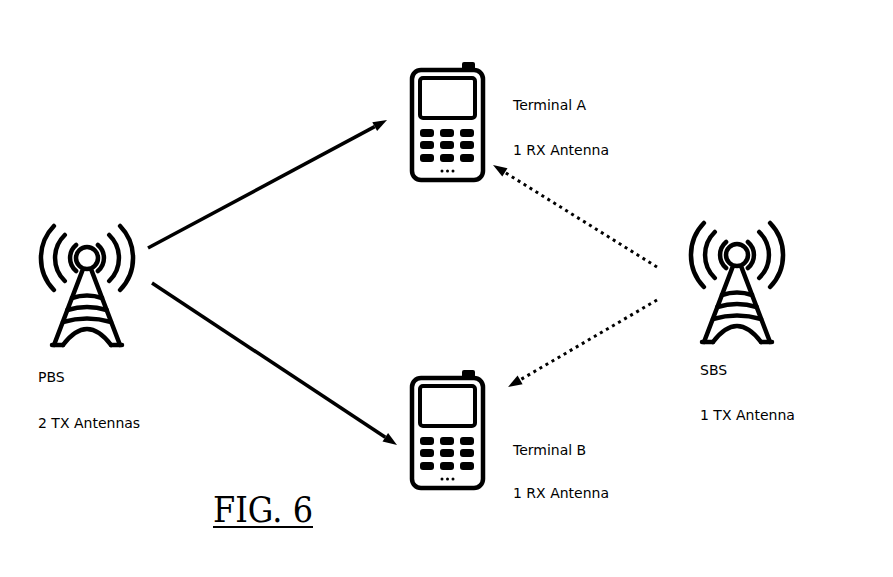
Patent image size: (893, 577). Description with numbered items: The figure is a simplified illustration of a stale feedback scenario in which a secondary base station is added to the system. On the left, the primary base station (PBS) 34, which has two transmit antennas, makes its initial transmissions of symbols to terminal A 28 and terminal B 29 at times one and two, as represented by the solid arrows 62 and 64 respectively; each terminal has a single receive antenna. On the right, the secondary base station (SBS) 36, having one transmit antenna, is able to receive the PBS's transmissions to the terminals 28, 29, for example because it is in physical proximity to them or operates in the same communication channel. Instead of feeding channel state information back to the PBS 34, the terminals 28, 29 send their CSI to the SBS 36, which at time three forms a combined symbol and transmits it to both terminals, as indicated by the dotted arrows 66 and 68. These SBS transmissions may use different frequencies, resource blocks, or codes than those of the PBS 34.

The terminal A 28 is at (412, 98).
The terminal B 29 is at (430, 378).
The primary base station (PBS) 34 is at (87, 237).
The secondary base station (SBS) 36 is at (735, 233).
The arrow 62 is at (260, 187).
The arrow 64 is at (235, 334).
The dotted arrow 66 is at (575, 218).
The dotted arrow 68 is at (575, 347).